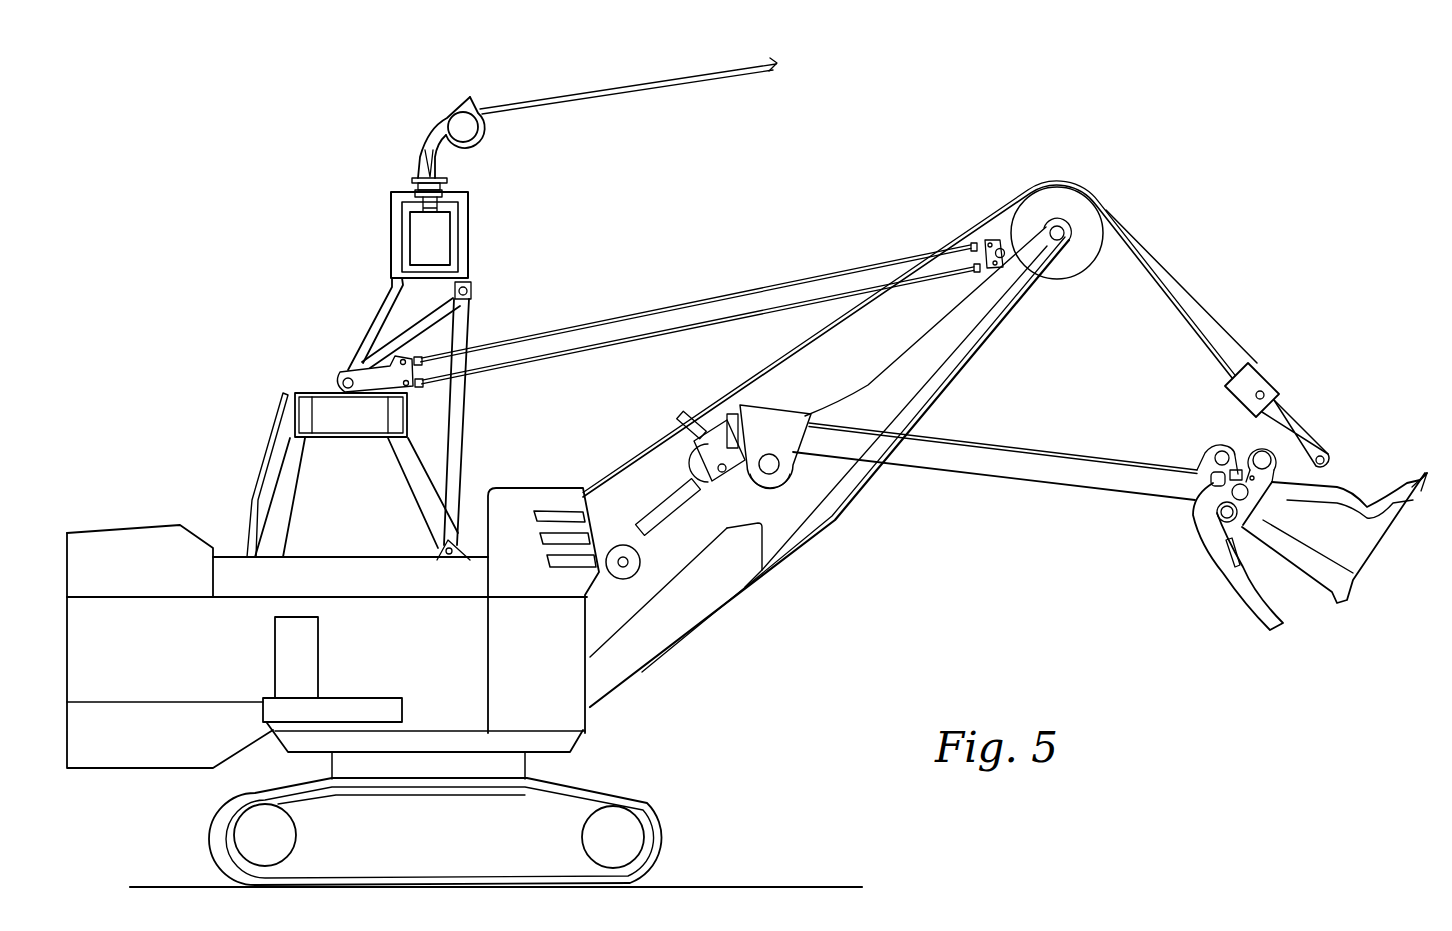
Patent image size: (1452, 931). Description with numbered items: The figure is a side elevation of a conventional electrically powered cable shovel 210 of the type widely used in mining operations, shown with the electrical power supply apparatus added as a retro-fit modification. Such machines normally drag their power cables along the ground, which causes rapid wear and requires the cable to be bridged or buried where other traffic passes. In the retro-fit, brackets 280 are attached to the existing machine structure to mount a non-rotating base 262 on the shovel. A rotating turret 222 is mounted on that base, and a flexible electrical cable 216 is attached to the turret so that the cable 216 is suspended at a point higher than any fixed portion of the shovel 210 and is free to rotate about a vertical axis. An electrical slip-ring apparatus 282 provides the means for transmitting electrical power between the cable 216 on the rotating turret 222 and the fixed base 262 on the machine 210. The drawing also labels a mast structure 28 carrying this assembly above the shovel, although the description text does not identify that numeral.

The cable shovel 210 is at (605, 718).
The flexible electrical cable 216 is at (628, 97).
The rotating turret 222 is at (417, 142).
The non-rotating base 262 is at (470, 228).
The electrical slip-ring apparatus 282 is at (422, 234).
The mast 28 is at (408, 332).
The brackets 280 is at (466, 312).